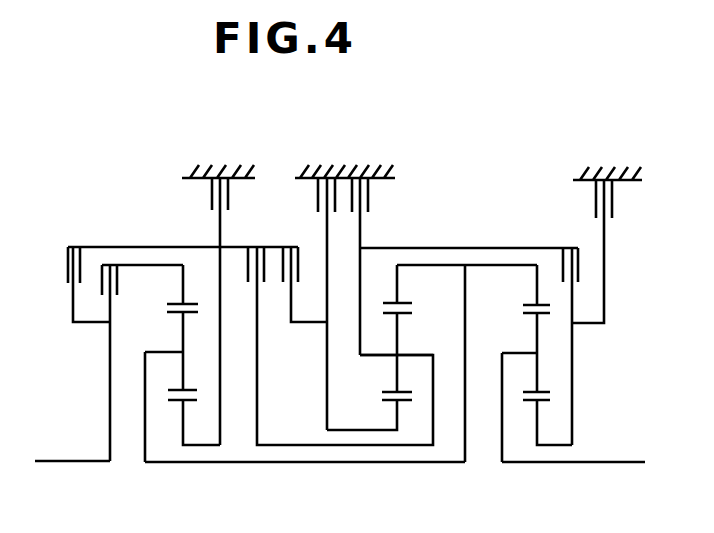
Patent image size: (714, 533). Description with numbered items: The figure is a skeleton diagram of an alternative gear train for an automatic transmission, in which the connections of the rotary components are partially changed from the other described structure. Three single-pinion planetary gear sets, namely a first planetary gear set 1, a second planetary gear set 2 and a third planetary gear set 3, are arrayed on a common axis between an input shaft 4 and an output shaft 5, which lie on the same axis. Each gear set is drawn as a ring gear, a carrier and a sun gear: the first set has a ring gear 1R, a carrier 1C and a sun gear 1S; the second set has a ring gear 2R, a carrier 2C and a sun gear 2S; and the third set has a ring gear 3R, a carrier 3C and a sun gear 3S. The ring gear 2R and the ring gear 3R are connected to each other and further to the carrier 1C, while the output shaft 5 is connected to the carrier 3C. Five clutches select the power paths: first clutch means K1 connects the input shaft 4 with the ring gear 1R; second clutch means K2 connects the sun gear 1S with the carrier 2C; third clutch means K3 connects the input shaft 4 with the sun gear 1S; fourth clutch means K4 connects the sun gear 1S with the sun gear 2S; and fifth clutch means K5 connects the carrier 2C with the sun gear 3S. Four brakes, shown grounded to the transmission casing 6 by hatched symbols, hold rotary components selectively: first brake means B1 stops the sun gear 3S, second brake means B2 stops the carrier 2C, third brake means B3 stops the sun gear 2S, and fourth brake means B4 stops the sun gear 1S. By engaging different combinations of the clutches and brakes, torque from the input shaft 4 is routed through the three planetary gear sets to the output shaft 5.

The first planetary gear set 1 is at (295, 391).
The second planetary gear set 2 is at (396, 390).
The third planetary gear set 3 is at (518, 391).
The input shaft 4 is at (72, 461).
The output shaft 5 is at (612, 462).
The transmission casing 6 is at (199, 170).
The first clutch means K1 is at (142, 283).
The second clutch means K2 is at (336, 334).
The third clutch means K3 is at (86, 271).
The fourth clutch means K4 is at (304, 272).
The fifth clutch means K5 is at (564, 334).
The first brake means B1 is at (596, 229).
The second brake means B2 is at (369, 245).
The third brake means B3 is at (325, 283).
The fourth brake means B4 is at (214, 290).
The ring gear of the first planetary gear set 1R is at (190, 308).
The carrier of the first planetary gear set 1C is at (163, 393).
The sun gear of the first planetary gear set 1S is at (175, 444).
The ring gear of the second planetary gear set 2R is at (424, 363).
The carrier of the second planetary gear set 2C is at (398, 341).
The sun gear of the second planetary gear set 2S is at (381, 432).
The ring gear of the third planetary gear set 3R is at (507, 309).
The carrier of the third planetary gear set 3C is at (517, 394).
The sun gear of the third planetary gear set 3S is at (526, 445).